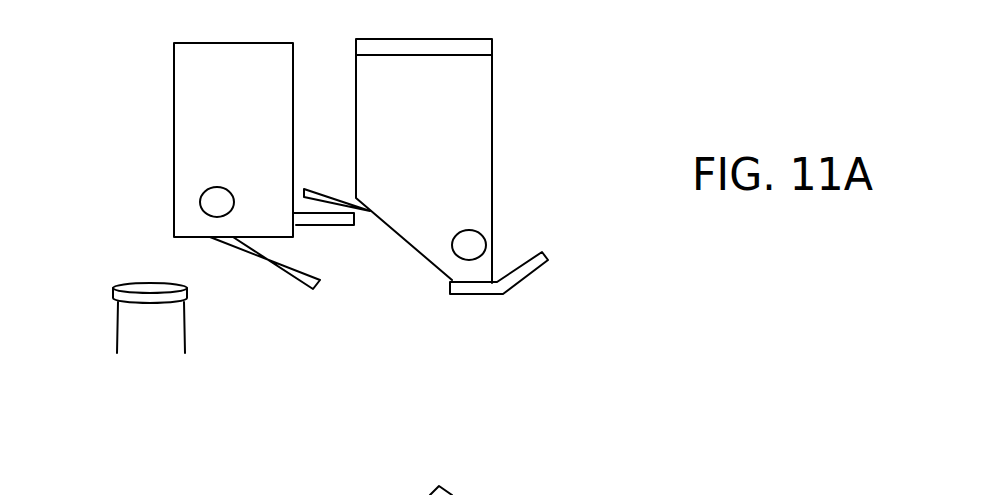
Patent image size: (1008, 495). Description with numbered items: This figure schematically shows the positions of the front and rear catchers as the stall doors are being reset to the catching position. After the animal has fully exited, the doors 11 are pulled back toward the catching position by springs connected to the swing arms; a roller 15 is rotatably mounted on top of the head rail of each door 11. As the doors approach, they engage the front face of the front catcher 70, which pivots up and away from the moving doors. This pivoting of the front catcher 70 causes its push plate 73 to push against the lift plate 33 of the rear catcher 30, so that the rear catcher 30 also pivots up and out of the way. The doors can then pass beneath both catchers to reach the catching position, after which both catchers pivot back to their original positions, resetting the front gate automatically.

The door 11 is at (135, 332).
The roller 15 is at (138, 283).
The rear catcher 30 is at (473, 288).
The lift plate 33 is at (320, 197).
The front catcher 70 is at (285, 270).
The push plate 73 is at (323, 218).